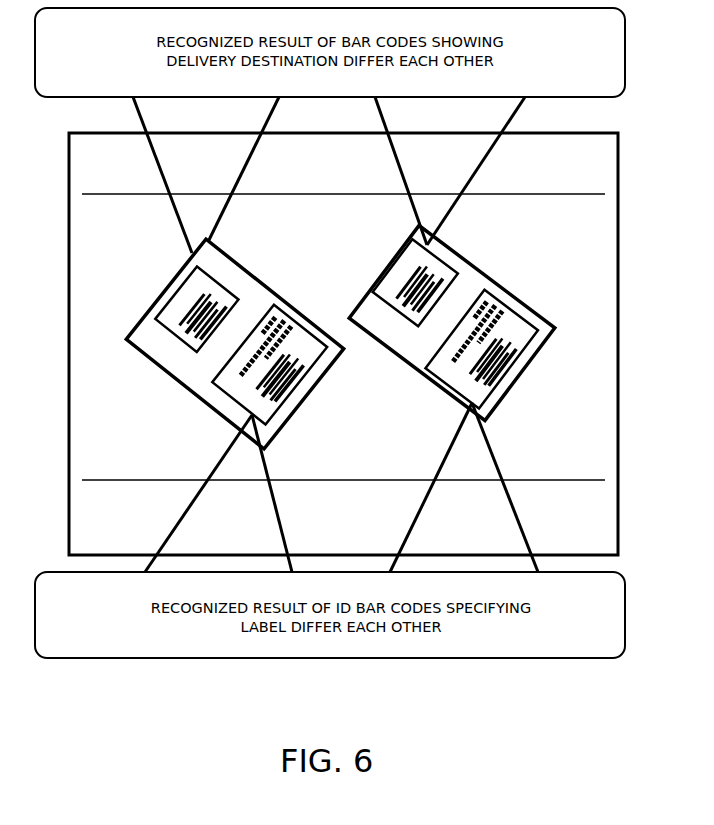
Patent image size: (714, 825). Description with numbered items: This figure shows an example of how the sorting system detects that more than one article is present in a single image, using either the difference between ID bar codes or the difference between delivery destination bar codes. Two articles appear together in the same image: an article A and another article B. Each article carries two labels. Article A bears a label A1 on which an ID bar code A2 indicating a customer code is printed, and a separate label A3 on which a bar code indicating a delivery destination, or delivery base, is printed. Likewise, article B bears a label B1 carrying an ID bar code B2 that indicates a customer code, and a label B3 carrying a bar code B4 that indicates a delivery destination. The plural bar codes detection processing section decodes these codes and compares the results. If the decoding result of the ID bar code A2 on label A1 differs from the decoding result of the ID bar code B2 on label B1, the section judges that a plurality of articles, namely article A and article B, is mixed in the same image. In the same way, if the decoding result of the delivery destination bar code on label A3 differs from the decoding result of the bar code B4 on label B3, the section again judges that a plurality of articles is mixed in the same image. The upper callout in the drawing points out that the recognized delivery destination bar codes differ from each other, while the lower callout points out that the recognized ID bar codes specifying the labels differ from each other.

The article A is at (222, 377).
The label A1 is at (250, 406).
The ID bar code A2 is at (288, 390).
The label A3 is at (159, 336).
The article B is at (465, 328).
The label B1 is at (520, 336).
The ID bar code B2 is at (498, 367).
The label B3 is at (421, 295).
The bar code B4 is at (435, 262).